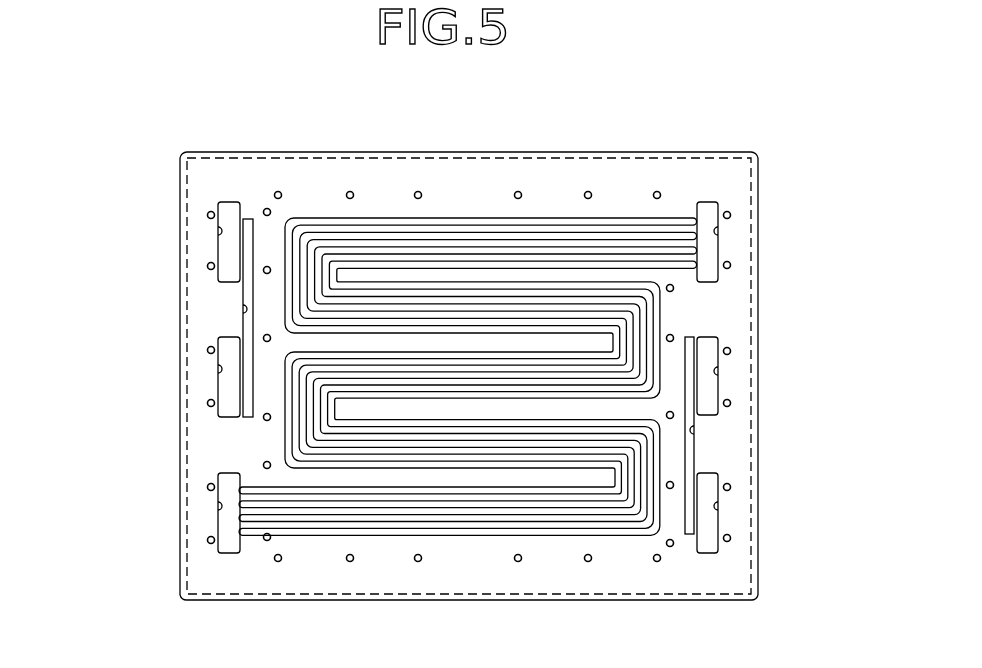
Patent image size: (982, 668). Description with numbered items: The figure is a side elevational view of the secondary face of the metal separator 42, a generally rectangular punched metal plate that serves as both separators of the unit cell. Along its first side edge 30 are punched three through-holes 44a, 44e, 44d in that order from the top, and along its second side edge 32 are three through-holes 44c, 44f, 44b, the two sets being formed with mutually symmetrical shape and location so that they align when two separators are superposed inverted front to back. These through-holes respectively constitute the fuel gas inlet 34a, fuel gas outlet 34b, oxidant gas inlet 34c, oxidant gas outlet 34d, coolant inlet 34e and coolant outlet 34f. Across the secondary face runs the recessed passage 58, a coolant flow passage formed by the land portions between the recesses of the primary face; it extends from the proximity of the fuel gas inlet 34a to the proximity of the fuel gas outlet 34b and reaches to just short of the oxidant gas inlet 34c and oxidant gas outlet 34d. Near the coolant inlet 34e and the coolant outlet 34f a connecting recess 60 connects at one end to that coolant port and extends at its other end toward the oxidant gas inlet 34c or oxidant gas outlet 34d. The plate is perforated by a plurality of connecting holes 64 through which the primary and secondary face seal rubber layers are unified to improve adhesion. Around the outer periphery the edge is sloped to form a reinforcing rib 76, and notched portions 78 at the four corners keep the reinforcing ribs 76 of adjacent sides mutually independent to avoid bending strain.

The metal separator 42 is at (749, 113).
The first side edge 30 is at (720, 318).
The second side edge 32 is at (222, 448).
The reinforcing rib 76 is at (186, 203).
The notched portion 78 is at (182, 156).
The connecting hole 64 is at (519, 192).
The recessed passage 58 is at (369, 318).
The connecting recess 60 is at (243, 309).
The fuel gas inlet 34a is at (790, 243).
The fuel gas outlet 34b is at (151, 517).
The oxidant gas inlet 34c is at (151, 245).
The oxidant gas outlet 34d is at (790, 517).
The coolant inlet 34e is at (790, 378).
The coolant outlet 34f is at (151, 379).
The through-hole 44a is at (718, 231).
The through-hole 44b is at (218, 506).
The through-hole 44c is at (218, 231).
The through-hole 44d is at (718, 506).
The through-hole 44e is at (718, 371).
The through-hole 44f is at (218, 369).